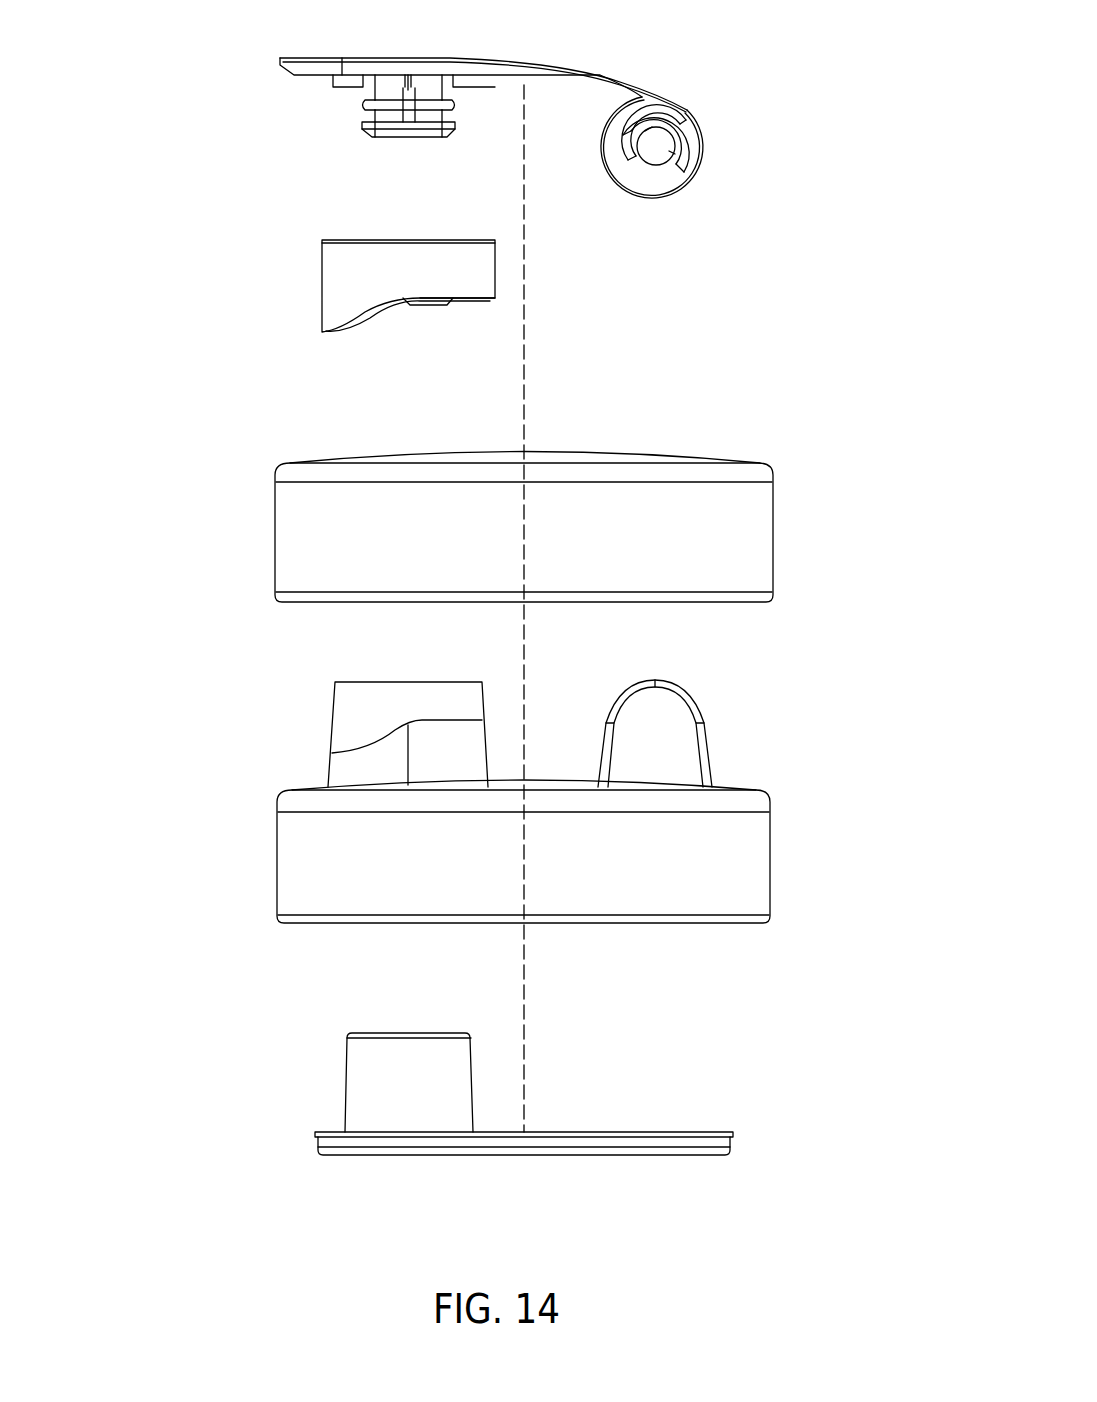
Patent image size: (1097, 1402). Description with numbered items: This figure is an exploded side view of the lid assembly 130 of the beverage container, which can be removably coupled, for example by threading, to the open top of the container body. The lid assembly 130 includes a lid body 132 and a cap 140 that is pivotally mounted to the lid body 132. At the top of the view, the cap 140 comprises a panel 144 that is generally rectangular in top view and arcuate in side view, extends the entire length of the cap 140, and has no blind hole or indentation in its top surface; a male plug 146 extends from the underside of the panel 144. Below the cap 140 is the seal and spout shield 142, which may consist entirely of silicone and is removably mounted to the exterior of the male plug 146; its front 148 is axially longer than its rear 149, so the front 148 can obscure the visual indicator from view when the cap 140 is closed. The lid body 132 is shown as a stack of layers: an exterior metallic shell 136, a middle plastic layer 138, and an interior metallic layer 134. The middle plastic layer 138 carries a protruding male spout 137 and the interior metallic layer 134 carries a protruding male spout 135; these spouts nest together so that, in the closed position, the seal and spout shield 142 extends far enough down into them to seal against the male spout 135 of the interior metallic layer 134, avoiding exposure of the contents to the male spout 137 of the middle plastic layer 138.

The lid assembly 130 is at (872, 163).
The lid body 132 is at (180, 463).
The interior metallic layer 134 is at (657, 1132).
The male spout of interior metallic layer 135 is at (347, 1085).
The exterior metallic shell 136 is at (773, 532).
The male spout of middle plastic layer 137 is at (333, 747).
The middle plastic layer 138 is at (771, 840).
The cap 140 is at (733, 63).
The seal and spout shield 142 is at (362, 343).
The panel 144 is at (572, 62).
The male plug 146 is at (390, 138).
The front of seal and spout shield 148 is at (322, 297).
The rear of seal and spout shield 149 is at (495, 277).